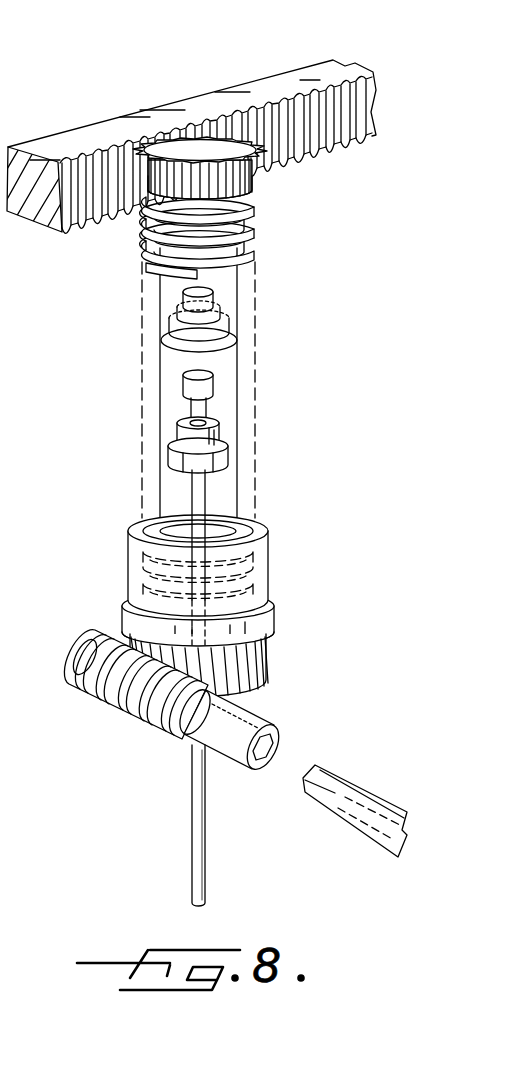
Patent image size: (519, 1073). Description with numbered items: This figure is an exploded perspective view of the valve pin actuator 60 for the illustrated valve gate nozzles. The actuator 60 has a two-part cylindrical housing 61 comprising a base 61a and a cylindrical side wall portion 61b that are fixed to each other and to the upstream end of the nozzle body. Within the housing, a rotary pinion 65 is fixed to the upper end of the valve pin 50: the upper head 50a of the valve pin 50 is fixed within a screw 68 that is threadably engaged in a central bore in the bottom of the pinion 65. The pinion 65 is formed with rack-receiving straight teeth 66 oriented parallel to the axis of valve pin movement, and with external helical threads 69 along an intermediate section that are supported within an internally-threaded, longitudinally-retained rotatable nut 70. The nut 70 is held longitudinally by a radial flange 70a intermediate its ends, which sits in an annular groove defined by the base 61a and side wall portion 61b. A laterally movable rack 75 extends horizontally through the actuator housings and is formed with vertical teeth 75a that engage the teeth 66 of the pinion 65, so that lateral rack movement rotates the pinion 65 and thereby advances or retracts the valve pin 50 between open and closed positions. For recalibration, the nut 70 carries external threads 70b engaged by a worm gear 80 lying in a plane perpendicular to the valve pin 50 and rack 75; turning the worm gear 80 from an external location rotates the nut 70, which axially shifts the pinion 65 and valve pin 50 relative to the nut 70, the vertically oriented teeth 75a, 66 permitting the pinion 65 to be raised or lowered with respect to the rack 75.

The rack 75 is at (193, 164).
The vertical teeth 75a is at (295, 132).
The rotary pinion 65 is at (227, 152).
The rack-receiving straight teeth 66 is at (268, 184).
The external helical threads 69 is at (258, 219).
The upper head 50a is at (213, 388).
The screw 68 is at (200, 443).
The rotatable nut 70 is at (273, 538).
The radial flange 70a is at (278, 621).
The external threads 70b is at (262, 672).
The worm gear 80 is at (143, 713).
The valve pin 50 is at (193, 836).
The actuator 60 is at (14, 302).
The cylindrical housing 61 is at (10, 337).
The base 61a is at (22, 380).
The cylindrical side wall portion 61b is at (15, 250).